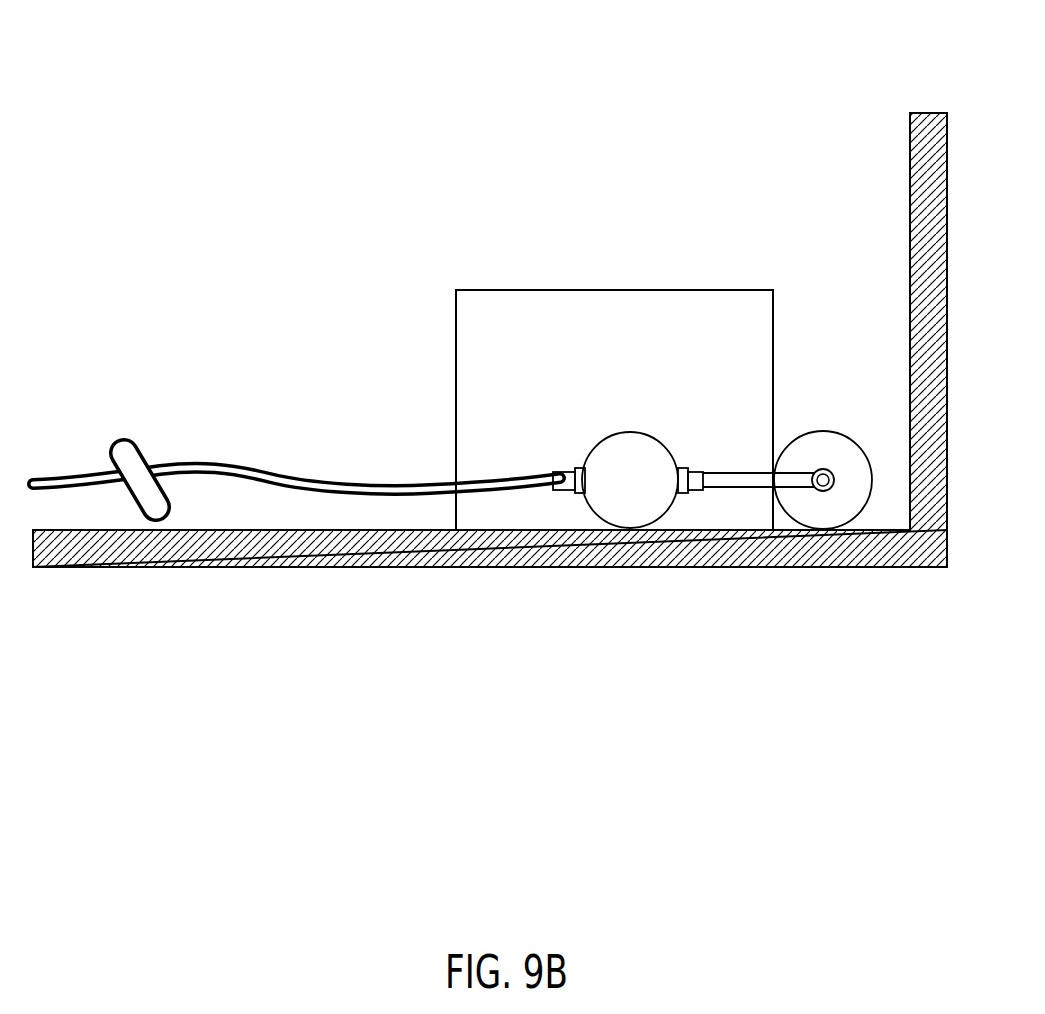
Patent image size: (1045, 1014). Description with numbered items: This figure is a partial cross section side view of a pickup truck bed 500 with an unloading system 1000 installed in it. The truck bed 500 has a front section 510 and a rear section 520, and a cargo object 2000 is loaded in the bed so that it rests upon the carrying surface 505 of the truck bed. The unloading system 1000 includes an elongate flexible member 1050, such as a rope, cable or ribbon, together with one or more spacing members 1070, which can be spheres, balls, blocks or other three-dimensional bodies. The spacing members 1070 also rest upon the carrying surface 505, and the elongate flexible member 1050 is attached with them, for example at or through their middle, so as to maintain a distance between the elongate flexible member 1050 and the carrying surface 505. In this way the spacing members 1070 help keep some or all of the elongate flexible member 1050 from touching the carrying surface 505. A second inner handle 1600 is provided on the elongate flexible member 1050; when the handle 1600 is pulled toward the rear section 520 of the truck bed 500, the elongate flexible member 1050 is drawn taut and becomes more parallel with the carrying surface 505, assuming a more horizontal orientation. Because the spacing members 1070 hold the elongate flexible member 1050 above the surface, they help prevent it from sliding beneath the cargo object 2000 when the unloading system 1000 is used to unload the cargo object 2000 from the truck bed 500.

The pickup truck bed 500 is at (802, 88).
The front section 510 is at (888, 591).
The rear section 520 is at (83, 593).
The carrying surface 505 is at (318, 526).
The unloading system 1000 is at (220, 249).
The elongate flexible member 1050 is at (313, 447).
The second inner handle 1600 is at (135, 419).
The cargo object 2000 is at (652, 363).
The spacing member 1070 is at (832, 410).